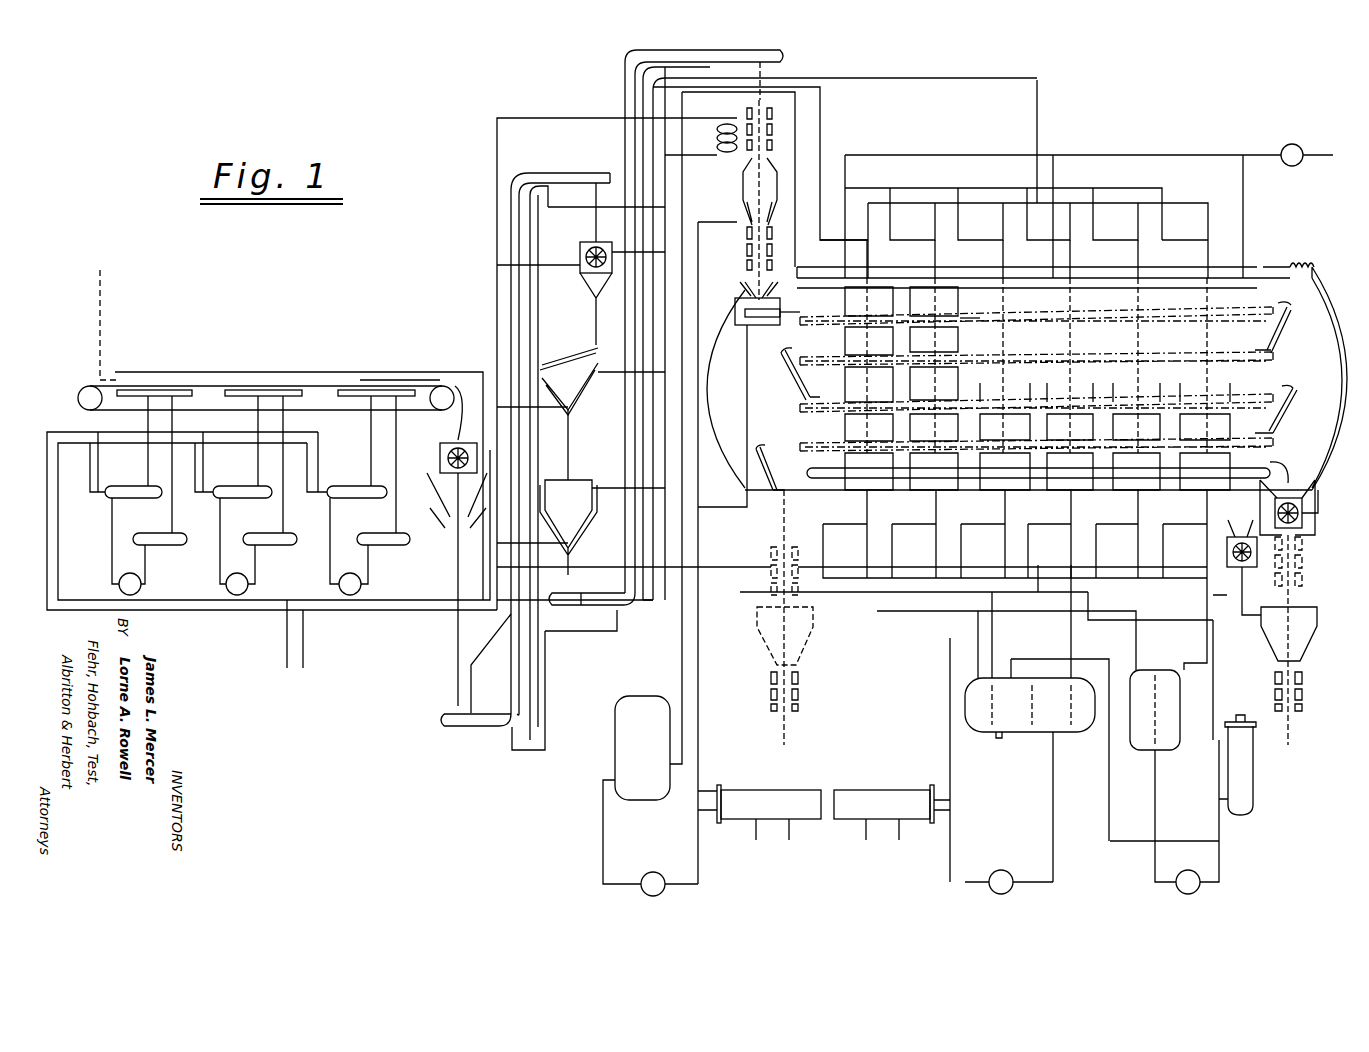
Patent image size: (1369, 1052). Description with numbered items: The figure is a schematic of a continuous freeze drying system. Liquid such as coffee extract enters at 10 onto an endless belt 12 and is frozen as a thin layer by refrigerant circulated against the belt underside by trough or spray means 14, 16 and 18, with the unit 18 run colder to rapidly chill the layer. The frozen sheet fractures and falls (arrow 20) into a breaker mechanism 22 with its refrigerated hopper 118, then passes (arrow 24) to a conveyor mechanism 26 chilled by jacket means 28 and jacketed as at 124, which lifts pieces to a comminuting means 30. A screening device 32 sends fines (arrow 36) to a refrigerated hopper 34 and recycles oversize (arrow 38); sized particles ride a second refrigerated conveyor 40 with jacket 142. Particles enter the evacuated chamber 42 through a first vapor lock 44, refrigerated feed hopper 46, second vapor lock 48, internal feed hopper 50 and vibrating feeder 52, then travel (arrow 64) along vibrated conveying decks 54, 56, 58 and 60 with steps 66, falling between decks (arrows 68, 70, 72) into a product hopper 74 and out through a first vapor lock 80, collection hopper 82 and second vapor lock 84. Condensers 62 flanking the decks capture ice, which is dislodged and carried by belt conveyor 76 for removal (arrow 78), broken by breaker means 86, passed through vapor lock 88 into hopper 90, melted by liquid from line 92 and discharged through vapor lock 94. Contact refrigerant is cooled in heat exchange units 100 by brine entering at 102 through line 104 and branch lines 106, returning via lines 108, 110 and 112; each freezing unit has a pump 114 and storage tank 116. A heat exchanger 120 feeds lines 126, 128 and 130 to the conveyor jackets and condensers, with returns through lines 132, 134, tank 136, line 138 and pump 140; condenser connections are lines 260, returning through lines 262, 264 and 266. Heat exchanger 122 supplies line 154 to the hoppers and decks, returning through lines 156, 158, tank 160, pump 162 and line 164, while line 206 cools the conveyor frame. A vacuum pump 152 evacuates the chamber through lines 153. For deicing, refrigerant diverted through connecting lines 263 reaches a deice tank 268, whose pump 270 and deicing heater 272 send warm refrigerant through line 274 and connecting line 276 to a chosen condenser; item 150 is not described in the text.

The liquid introduction point 10 is at (98, 344).
The endless belt 12 is at (322, 372).
The trough or spray means 14 is at (180, 390).
The trough or spray means 16 is at (292, 390).
The trough or spray means 18 is at (404, 390).
The arrow 20 is at (456, 386).
The breaker mechanism 22 is at (466, 440).
The arrow 24 is at (455, 660).
The conveyor mechanism 26 is at (456, 730).
The refrigerated jacket means 28 is at (512, 178).
The comminuting means 30 is at (580, 240).
The screening device 32 is at (562, 358).
The refrigerated hopper 34 is at (578, 478).
The arrow 36 is at (570, 420).
The arrow 38 is at (503, 636).
The second refrigerated conveyor 40 is at (620, 608).
The freeze drying chamber 42 is at (1333, 290).
The first vapor lock 44 is at (772, 130).
The refrigerated feed hopper 46 is at (743, 185).
The second vapor lock 48 is at (747, 248).
The internal feed hopper 50 is at (738, 302).
The vibrating feeder 52 is at (760, 326).
The conveying deck 54 is at (1084, 314).
The conveying deck 56 is at (1082, 355).
The conveying deck 58 is at (1082, 398).
The conveying deck 60 is at (1108, 435).
The condensers 62 is at (920, 290).
The arrow 64 is at (820, 290).
The steps 66 is at (940, 312).
The arrow 68 is at (1245, 336).
The arrow 70 is at (785, 392).
The arrow 72 is at (1272, 420).
The product hopper 74 is at (777, 445).
The belt conveyor 76 is at (1272, 463).
The arrow 78 is at (1292, 480).
The first vapor lock 80 is at (771, 565).
The collection hopper 82 is at (806, 645).
The second vapor lock 84 is at (798, 686).
The breaker means 86 is at (1302, 523).
The first vapor lock 88 is at (1302, 562).
The collection hopper 90 is at (1314, 612).
The line 92 is at (1250, 597).
The vapor lock 94 is at (1302, 680).
The heat exchange units 100 is at (130, 486).
The brine inlet 102 is at (305, 662).
The line 104 is at (180, 600).
The branch lines 106 is at (90, 495).
The lines 108 is at (90, 452).
The line 110 is at (218, 611).
The line 112 is at (285, 666).
The pump 114 is at (119, 584).
The storage tank 116 is at (152, 533).
The refrigerated hopper 118 is at (440, 525).
The heat exchanger 120 is at (890, 790).
The heat exchanger 122 is at (768, 790).
The jacket 124 is at (497, 230).
The line 126 is at (950, 700).
The line 128 is at (730, 570).
The line 130 is at (548, 715).
The line 132 is at (580, 206).
The line 134 is at (700, 517).
The tank 136 is at (1028, 736).
The line 138 is at (1053, 788).
The pump 140 is at (1010, 894).
The jacket 142 is at (625, 70).
The feed line 150 is at (766, 78).
The vacuum pump 152 is at (1290, 144).
The lines 153 is at (952, 155).
The line 154 is at (700, 680).
The return line 156 is at (682, 668).
The return line 158 is at (603, 812).
The tank 160 is at (615, 748).
The pump 162 is at (658, 872).
The line 164 is at (978, 262).
The line 206 is at (1085, 275).
The connecting lines 260 is at (870, 515).
The line 262 is at (1188, 203).
The connecting lines 263 is at (890, 220).
The line 264 is at (922, 188).
The line 266 is at (822, 100).
The deice tank 268 is at (1165, 750).
The pump 270 is at (1180, 894).
The deicing heater 272 is at (1228, 799).
The line 274 is at (1213, 665).
The connecting line 276 is at (1178, 558).